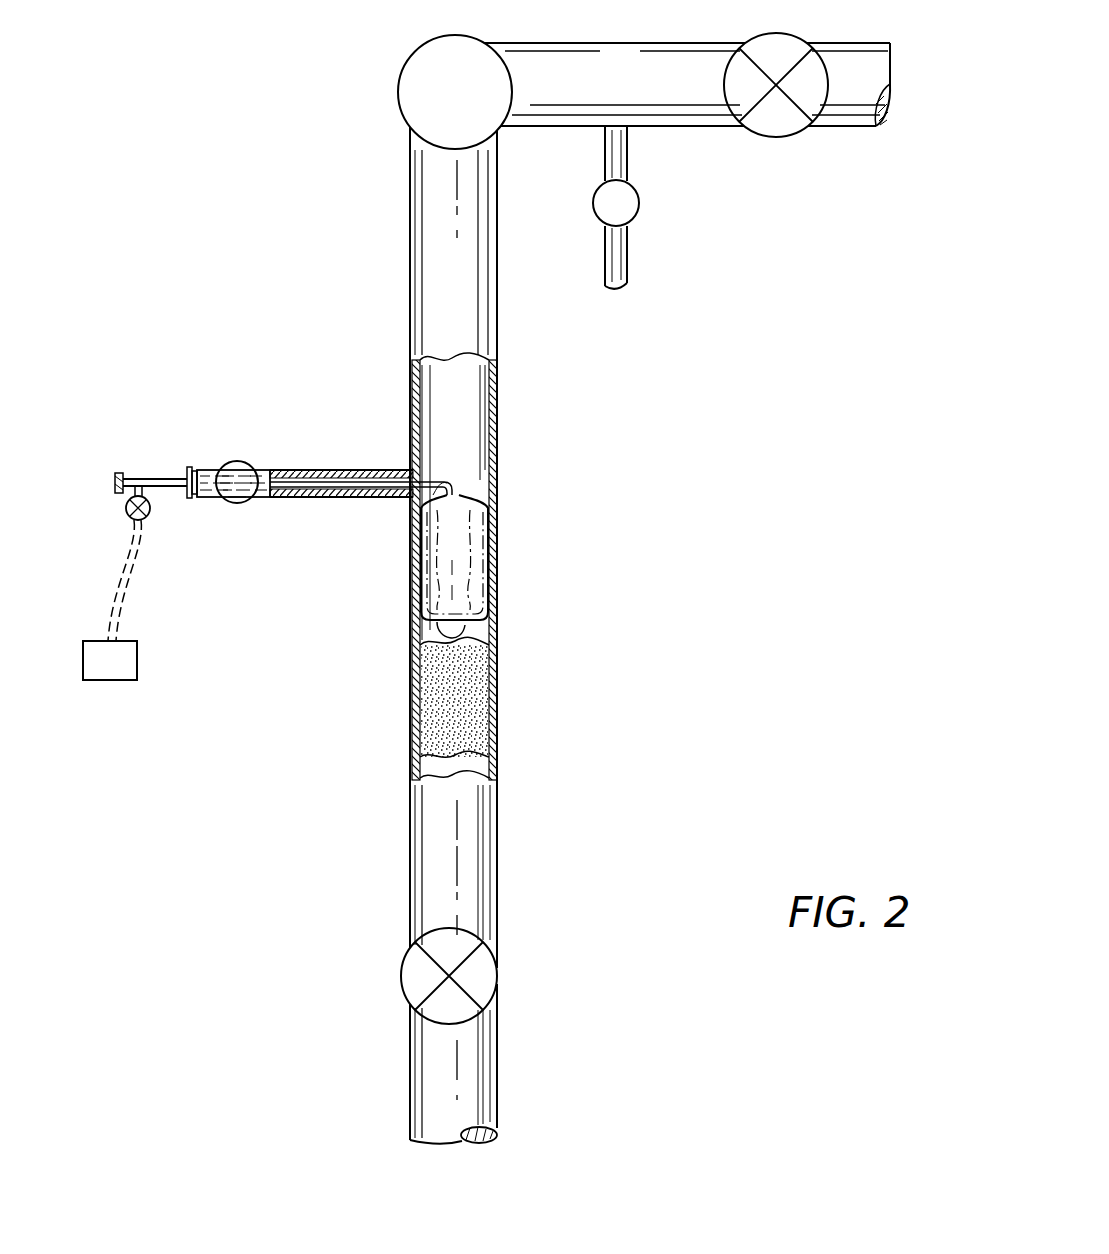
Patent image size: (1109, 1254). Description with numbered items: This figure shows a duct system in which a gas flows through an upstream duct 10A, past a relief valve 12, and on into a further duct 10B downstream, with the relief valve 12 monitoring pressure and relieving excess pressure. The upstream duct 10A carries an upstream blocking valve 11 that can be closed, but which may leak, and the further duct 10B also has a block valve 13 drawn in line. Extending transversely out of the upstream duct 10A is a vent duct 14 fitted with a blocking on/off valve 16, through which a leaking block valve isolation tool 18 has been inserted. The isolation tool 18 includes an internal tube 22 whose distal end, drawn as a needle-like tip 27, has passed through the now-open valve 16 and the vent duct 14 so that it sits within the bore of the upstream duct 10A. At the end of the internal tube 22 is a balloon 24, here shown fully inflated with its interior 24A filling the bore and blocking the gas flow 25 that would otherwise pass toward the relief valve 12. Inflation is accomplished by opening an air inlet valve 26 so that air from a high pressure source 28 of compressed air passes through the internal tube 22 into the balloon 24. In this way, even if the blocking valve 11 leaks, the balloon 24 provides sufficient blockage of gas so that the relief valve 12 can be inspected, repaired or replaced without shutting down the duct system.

The upstream duct 10A is at (487, 813).
The further duct 10B is at (653, 127).
The upstream blocking valve 11 is at (480, 973).
The relief valve 12 is at (398, 91).
The upper isolation valve 13 is at (771, 117).
The vent duct 14 is at (376, 468).
The blocking valve 16 is at (237, 461).
The leaking block valve isolation tool 18 is at (254, 413).
The internal tube 22 is at (150, 478).
The balloon 24 is at (482, 496).
The bag contents 24A is at (453, 578).
The gas flow 25 is at (478, 712).
The air inlet valve 26 is at (148, 517).
The needle / nozzle 27 is at (442, 481).
The high pressure source 28 is at (137, 656).